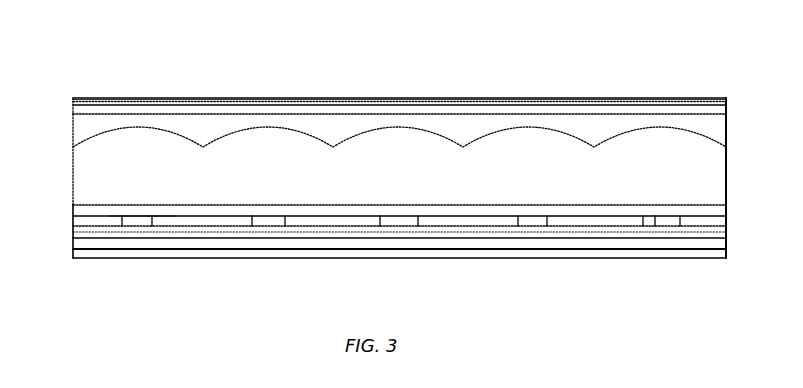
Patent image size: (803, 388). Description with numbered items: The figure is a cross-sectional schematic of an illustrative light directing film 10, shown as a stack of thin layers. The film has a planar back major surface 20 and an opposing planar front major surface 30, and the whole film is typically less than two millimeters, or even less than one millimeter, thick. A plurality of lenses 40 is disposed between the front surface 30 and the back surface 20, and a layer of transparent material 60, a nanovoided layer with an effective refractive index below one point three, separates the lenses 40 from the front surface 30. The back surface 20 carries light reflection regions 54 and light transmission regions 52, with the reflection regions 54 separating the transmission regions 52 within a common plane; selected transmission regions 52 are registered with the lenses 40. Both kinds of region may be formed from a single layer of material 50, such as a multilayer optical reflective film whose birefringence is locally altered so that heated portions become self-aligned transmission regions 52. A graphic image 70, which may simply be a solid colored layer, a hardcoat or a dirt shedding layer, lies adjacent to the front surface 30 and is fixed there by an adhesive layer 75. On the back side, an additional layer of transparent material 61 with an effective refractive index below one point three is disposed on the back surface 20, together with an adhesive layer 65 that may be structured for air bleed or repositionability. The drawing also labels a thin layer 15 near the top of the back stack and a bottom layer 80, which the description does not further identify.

The light directing film 10 is at (455, 63).
The encapsulant layer 15 is at (73, 211).
The back major surface 20 is at (472, 228).
The front major surface 30 is at (260, 107).
The lenses 40 is at (408, 176).
The layer of material 50 is at (73, 222).
The light transmission regions 52 is at (655, 227).
The light reflection regions 54 is at (170, 220).
The layer of transparent material 60 is at (377, 115).
The additional layer of transparent material 61 is at (727, 232).
The adhesive layer 65 is at (727, 249).
The graphic image 70 is at (590, 101).
The adhesive layer 75 is at (72, 102).
The bottom layer 80 is at (227, 260).